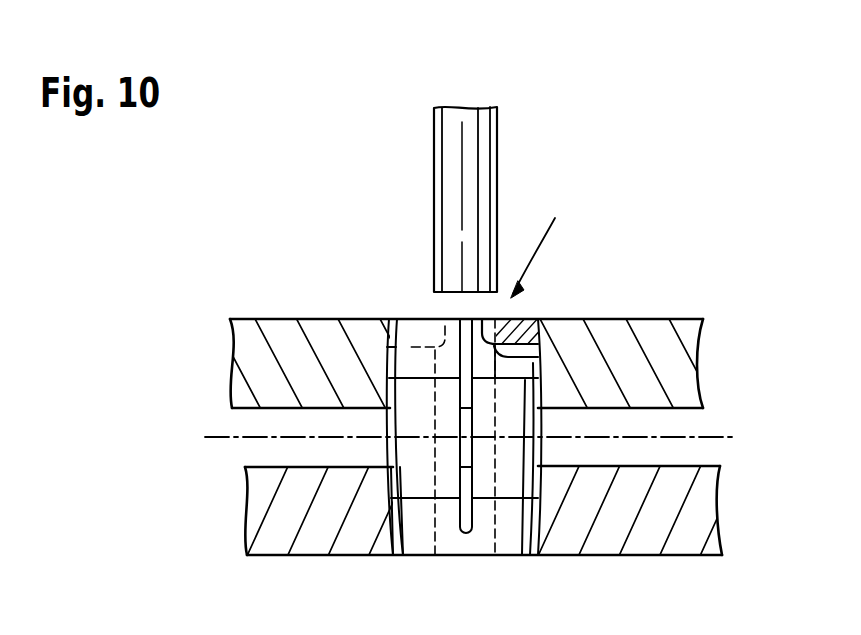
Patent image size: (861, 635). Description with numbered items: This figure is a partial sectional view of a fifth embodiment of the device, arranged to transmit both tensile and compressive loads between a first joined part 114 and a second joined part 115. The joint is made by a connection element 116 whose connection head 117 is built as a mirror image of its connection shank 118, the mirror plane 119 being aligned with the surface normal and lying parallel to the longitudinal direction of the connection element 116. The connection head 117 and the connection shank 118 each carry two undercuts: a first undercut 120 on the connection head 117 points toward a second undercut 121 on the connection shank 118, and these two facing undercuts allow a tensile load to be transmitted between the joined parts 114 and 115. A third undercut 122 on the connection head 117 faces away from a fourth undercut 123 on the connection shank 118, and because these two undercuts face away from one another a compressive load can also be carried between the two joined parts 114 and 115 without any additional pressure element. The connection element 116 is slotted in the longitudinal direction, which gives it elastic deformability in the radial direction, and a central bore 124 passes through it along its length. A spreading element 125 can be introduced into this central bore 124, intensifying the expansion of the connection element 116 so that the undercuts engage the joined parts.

The first joined part 114 is at (677, 335).
The second joined part 115 is at (713, 517).
The connection element 116 is at (549, 240).
The connection head 117 is at (543, 358).
The connection shank 118 is at (505, 540).
The mirror plane 119 is at (722, 432).
The first undercut 120 is at (542, 390).
The second undercut 121 is at (538, 483).
The third undercut 122 is at (388, 353).
The fourth undercut 123 is at (388, 527).
The central bore 124 is at (444, 319).
The spreading element 125 is at (473, 150).